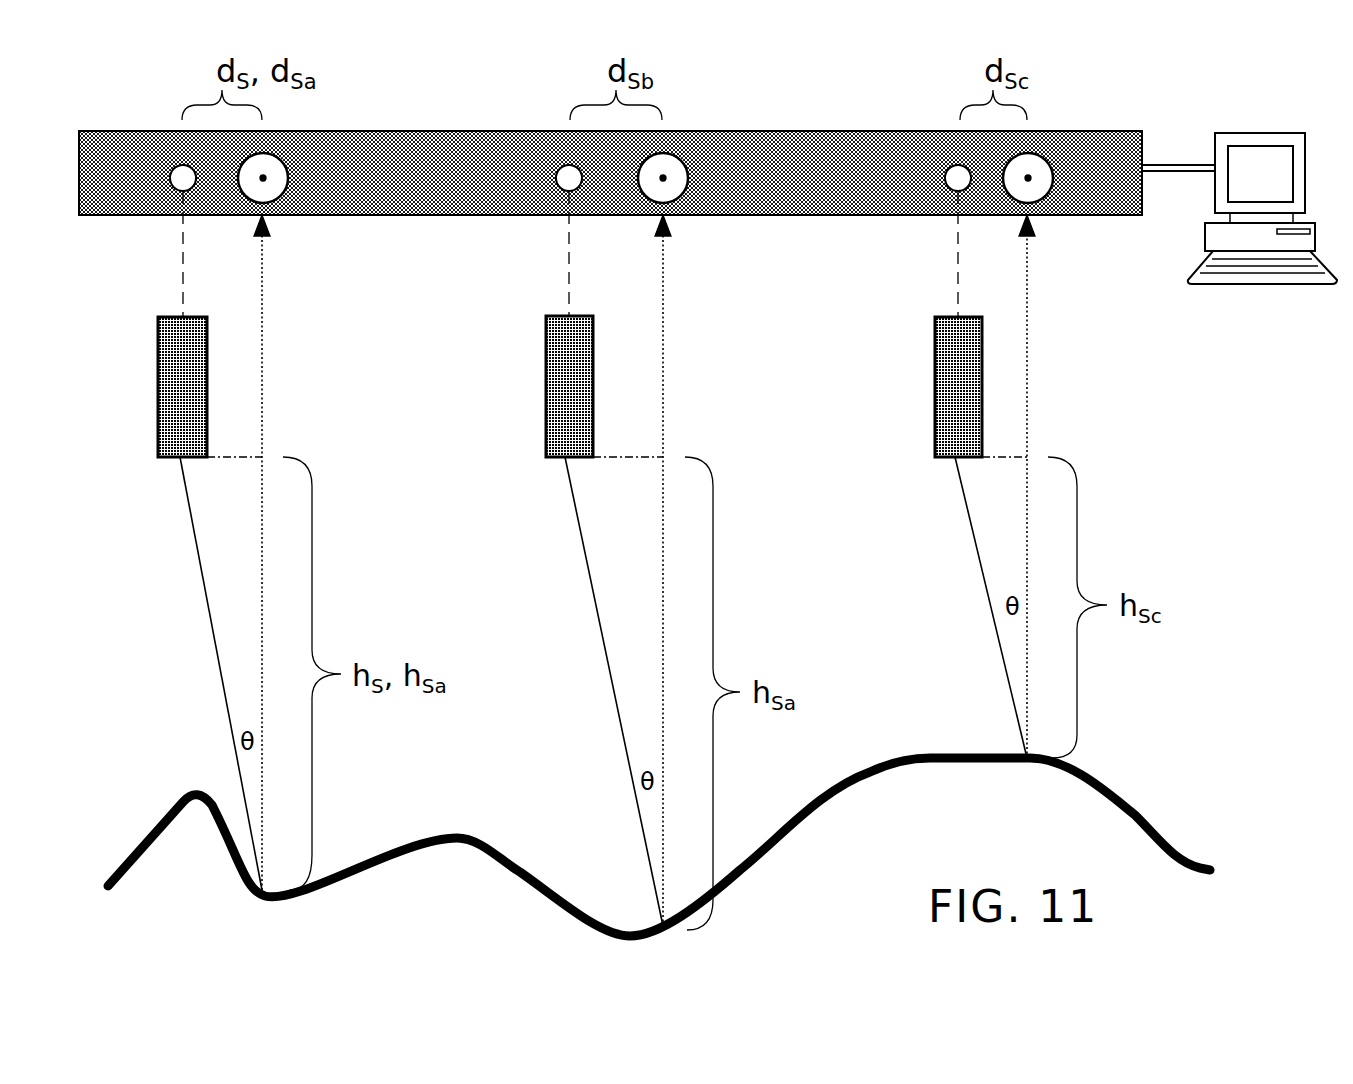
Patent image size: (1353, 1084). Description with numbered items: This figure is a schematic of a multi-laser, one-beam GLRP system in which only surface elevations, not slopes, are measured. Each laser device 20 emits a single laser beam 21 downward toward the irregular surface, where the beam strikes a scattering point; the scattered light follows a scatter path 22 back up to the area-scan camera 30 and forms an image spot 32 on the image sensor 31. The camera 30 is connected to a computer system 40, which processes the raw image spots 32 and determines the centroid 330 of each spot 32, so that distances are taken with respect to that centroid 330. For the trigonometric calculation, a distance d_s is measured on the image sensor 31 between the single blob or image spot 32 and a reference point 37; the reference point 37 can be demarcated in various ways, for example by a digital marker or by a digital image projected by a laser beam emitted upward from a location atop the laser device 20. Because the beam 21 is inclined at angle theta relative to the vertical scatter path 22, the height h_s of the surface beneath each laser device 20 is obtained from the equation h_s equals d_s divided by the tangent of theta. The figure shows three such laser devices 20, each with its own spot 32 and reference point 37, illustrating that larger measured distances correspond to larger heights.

The laser device 20 is at (172, 363).
The laser beam 21 is at (209, 646).
The scatter path 22 is at (273, 305).
The area-scan camera 30 is at (610, 221).
The image sensor 31 is at (815, 193).
The image spot 32 is at (297, 168).
The reference point 37 is at (170, 168).
The computer system 40 is at (1276, 181).
The centroid 330 is at (272, 178).